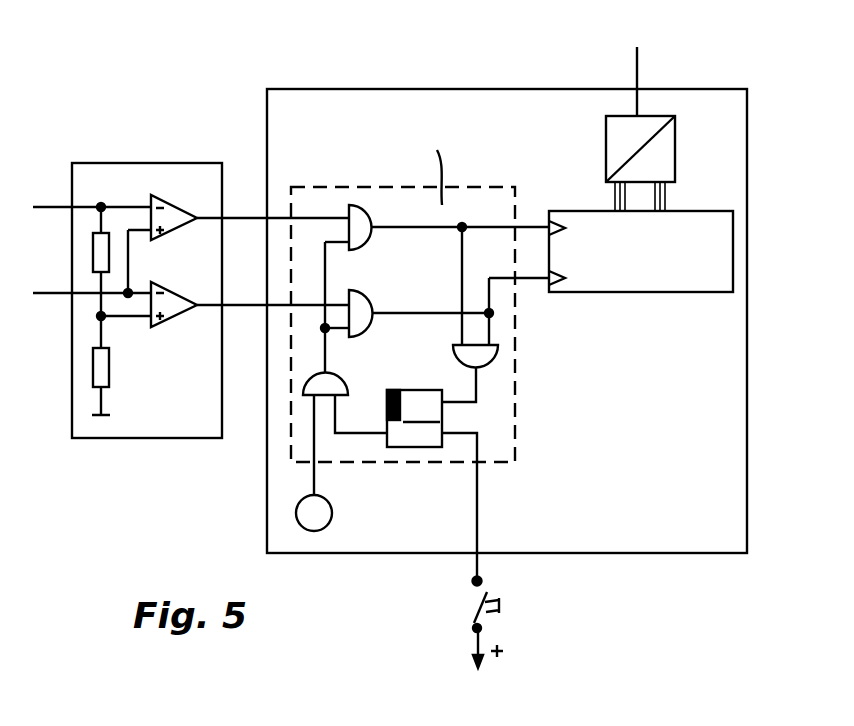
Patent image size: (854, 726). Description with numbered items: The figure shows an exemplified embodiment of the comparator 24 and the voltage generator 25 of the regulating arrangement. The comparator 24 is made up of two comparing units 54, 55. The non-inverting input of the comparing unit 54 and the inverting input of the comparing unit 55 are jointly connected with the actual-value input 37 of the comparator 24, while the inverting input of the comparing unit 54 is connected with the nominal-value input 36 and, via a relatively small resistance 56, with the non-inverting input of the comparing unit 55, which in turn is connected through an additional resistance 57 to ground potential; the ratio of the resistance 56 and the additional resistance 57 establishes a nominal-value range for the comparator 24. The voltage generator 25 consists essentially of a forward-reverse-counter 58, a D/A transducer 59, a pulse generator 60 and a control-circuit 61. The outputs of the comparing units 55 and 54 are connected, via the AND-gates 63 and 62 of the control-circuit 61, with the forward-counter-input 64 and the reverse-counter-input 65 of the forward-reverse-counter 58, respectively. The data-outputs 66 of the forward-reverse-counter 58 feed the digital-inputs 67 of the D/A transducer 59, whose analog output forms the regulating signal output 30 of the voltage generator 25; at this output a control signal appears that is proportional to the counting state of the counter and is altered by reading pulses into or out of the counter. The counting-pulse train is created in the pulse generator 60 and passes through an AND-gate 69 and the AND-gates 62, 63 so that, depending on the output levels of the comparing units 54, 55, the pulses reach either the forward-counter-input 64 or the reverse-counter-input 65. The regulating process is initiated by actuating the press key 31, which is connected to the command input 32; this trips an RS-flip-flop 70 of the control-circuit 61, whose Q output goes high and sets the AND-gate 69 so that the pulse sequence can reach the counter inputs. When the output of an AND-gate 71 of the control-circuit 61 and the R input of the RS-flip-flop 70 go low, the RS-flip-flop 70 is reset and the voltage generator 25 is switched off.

The comparator 24 is at (153, 425).
The voltage generator 25 is at (628, 530).
The regulating signal output 30 is at (637, 88).
The press key 31 is at (476, 608).
The command input 32 is at (480, 557).
The nominal-value input 36 is at (72, 207).
The actual-value input 37 is at (72, 295).
The comparing unit 54 is at (151, 205).
The comparing unit 55 is at (170, 303).
The resistance 56 is at (103, 252).
The additional resistance 57 is at (110, 368).
The forward-reverse-counter 58 is at (640, 278).
The D/A transducer 59 is at (665, 140).
The pulse generator 60 is at (326, 505).
The control-circuit 61 is at (317, 200).
The AND-gate 62 is at (365, 225).
The AND-gate 63 is at (370, 302).
The forward-counter-input 64 is at (549, 283).
The reverse-counter-input 65 is at (549, 226).
The data-outputs 66 is at (642, 205).
The digital-inputs 67 is at (640, 185).
The AND-gate 69 is at (333, 388).
The RS-flip-flop 70 is at (410, 400).
The AND-gate 71 is at (470, 362).